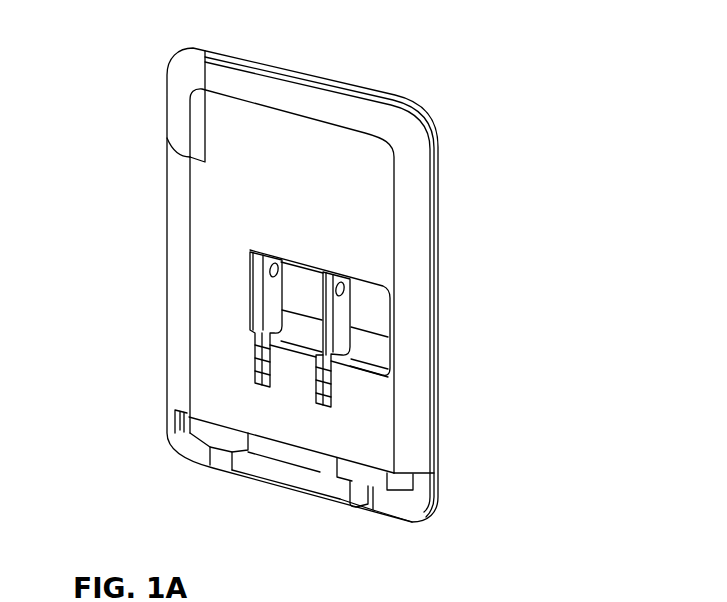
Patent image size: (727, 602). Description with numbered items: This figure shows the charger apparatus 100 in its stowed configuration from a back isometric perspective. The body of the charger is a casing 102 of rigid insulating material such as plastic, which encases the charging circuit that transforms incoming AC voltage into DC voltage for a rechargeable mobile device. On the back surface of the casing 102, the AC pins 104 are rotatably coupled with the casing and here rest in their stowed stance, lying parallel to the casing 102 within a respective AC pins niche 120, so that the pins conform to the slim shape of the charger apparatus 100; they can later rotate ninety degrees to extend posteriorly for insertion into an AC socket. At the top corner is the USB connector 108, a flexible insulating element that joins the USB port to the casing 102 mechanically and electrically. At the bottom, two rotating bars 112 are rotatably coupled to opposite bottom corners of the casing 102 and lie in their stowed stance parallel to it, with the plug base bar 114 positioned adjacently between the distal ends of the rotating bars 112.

The charger apparatus 100 is at (371, 53).
The casing 102 is at (437, 213).
The AC pins 104 is at (347, 320).
The USB connector 108 is at (166, 98).
The rotating bars 112 is at (172, 438).
The plug base bar 114 is at (283, 486).
The AC pins niche 120 is at (360, 345).